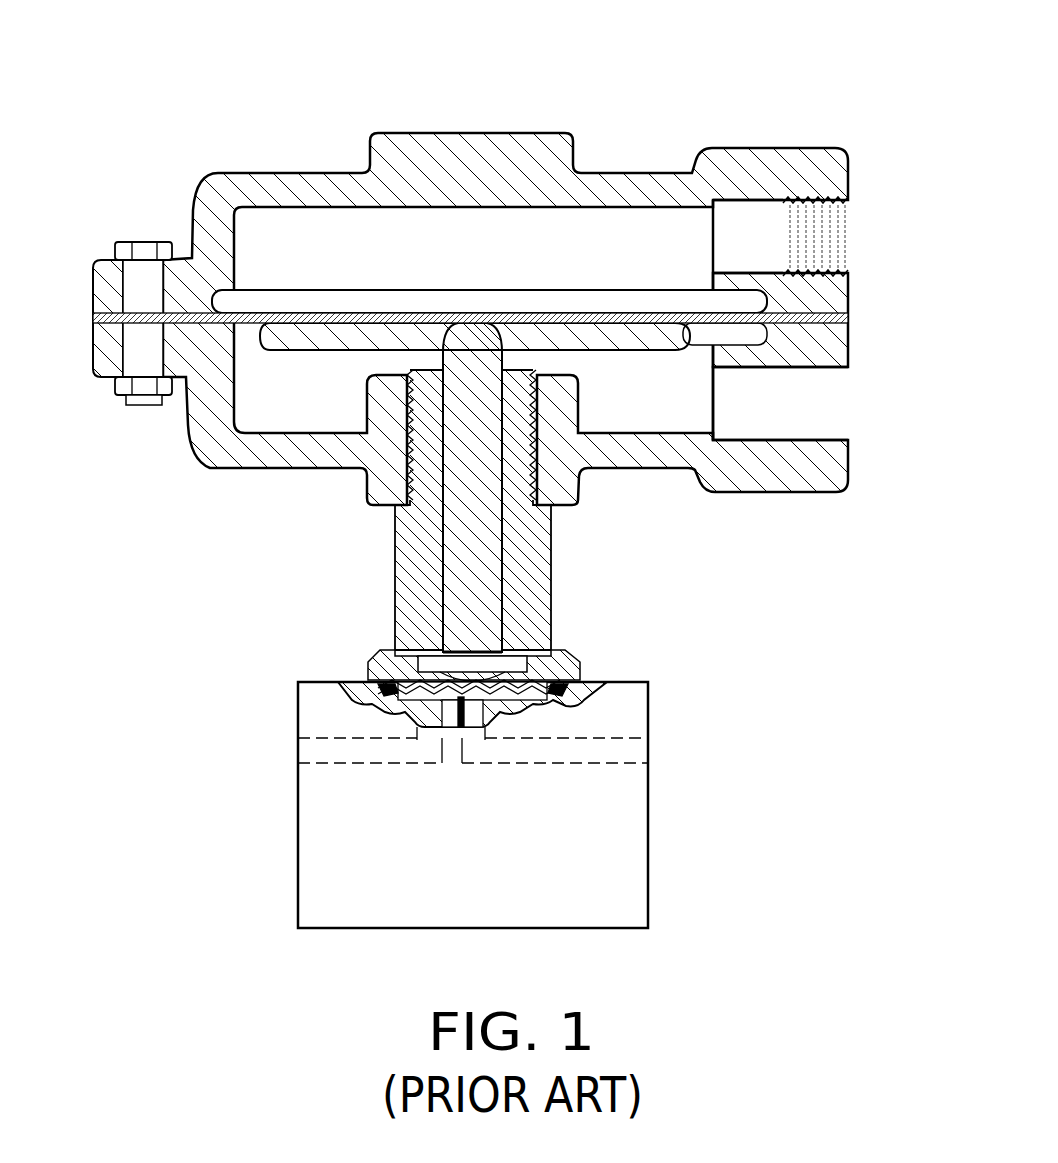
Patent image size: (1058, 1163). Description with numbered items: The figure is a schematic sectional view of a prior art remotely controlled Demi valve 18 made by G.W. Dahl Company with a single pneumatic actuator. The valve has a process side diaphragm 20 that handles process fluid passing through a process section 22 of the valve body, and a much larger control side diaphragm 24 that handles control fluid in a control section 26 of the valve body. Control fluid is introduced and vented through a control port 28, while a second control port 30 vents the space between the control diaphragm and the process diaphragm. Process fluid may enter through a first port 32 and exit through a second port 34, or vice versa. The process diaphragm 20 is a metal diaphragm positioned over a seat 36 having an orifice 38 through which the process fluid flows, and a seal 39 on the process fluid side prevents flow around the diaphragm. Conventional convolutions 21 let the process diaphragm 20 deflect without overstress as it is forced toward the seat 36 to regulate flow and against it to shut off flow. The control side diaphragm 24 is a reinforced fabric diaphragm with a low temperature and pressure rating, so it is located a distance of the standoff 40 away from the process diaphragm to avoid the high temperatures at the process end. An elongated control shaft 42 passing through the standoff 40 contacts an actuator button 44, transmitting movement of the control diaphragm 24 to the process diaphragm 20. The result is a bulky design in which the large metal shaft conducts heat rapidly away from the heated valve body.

The Demi valve 18 is at (504, 487).
The process side diaphragm 20 is at (447, 662).
The convolutions 21 is at (387, 703).
The process section 22 is at (298, 862).
The control side diaphragm 24 is at (262, 310).
The control section 26 is at (602, 172).
The control port 28 is at (850, 247).
The second control port 30 is at (850, 408).
The first port 32 is at (310, 748).
The second port 34 is at (643, 752).
The seat 36 is at (457, 697).
The orifice 38 is at (472, 697).
The seal 39 is at (567, 690).
The standoff 40 is at (393, 547).
The elongated control shaft 42 is at (552, 553).
The actuator button 44 is at (515, 657).